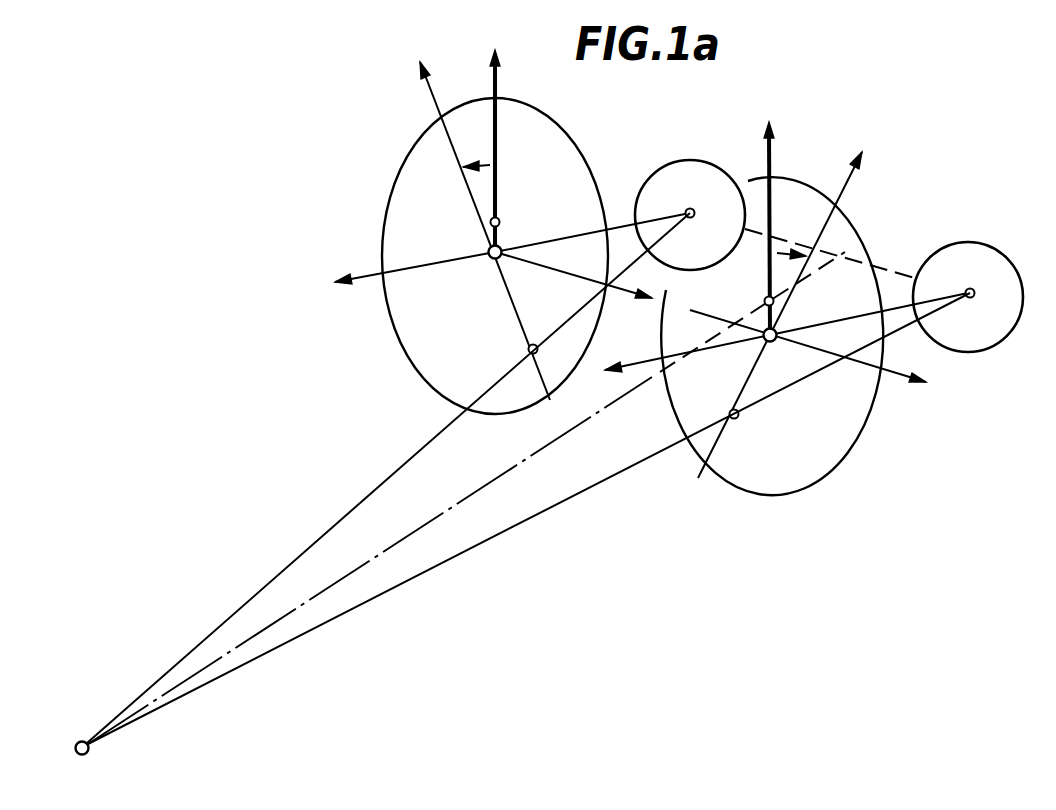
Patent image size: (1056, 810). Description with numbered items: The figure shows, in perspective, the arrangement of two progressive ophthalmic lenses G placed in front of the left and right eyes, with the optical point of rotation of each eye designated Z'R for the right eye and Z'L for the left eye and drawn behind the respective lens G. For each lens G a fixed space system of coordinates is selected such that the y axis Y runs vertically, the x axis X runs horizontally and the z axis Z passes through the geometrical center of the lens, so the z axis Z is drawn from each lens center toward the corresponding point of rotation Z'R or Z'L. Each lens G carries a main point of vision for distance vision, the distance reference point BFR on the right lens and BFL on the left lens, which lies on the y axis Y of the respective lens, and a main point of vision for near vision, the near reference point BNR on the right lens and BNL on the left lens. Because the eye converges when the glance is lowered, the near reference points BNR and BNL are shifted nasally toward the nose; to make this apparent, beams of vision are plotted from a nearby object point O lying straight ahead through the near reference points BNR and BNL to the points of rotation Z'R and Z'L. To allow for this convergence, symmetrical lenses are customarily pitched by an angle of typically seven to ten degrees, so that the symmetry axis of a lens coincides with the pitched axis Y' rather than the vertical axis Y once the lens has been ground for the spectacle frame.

The object point O is at (517, 484).
The progressive ophthalmic lens G is at (430, 337).
The distance reference point of the right lens BFR is at (519, 210).
The near reference point of the right lens BNR is at (504, 324).
The distance reference point of the left lens BFL is at (746, 288).
The near reference point of the left lens BNL is at (757, 439).
The optical point of rotation of the right eye Z'R is at (775, 219).
The optical point of rotation of the left eye Z'L is at (968, 297).
The x axis X is at (710, 335).
The y axis Y is at (641, 192).
The y' axis Y' is at (656, 267).
The z axis Z is at (651, 308).